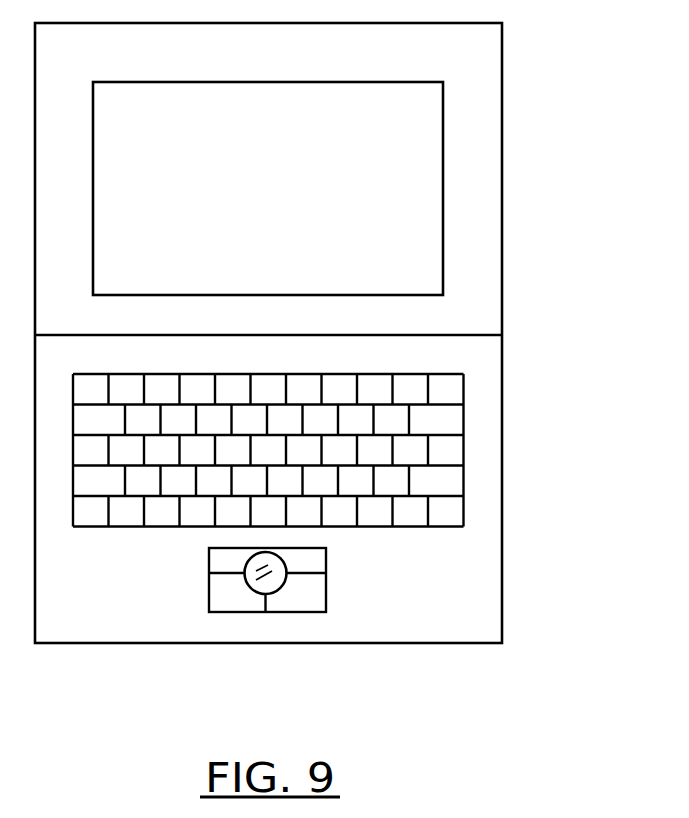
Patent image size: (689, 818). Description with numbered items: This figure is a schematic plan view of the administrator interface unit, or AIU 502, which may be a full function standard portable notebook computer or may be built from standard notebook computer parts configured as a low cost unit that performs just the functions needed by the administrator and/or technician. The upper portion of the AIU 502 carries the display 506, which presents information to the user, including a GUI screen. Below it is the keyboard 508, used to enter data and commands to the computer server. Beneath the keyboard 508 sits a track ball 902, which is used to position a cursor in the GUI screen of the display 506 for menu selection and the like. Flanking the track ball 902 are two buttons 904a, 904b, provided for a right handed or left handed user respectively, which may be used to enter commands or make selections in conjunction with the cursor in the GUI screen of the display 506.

The AIU 502 is at (520, 578).
The display 506 is at (443, 135).
The keyboard 508 is at (442, 447).
The track ball 902 is at (260, 586).
The button 904a is at (309, 598).
The button 904b is at (223, 593).